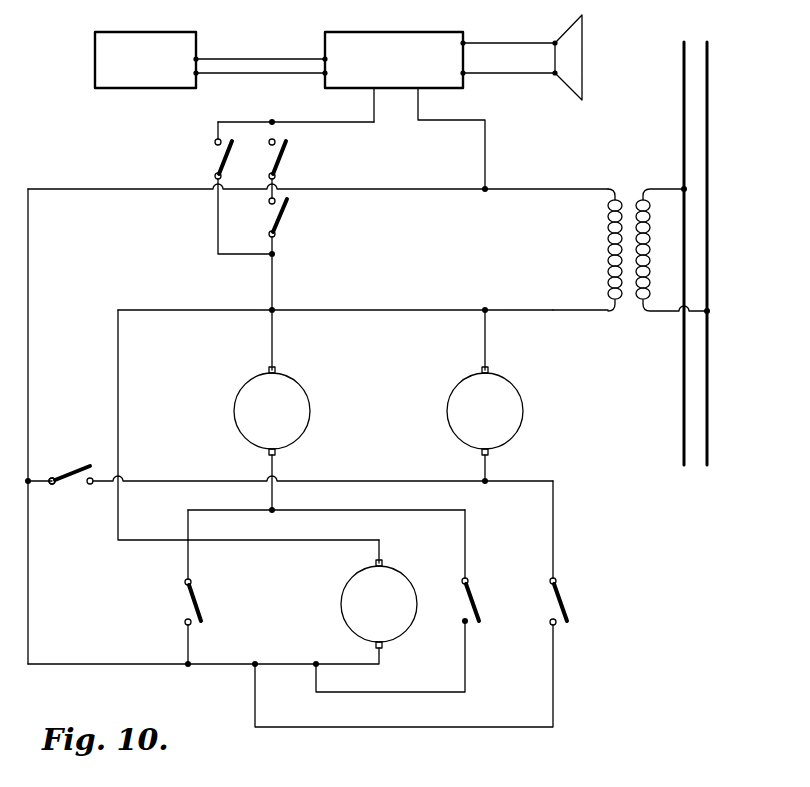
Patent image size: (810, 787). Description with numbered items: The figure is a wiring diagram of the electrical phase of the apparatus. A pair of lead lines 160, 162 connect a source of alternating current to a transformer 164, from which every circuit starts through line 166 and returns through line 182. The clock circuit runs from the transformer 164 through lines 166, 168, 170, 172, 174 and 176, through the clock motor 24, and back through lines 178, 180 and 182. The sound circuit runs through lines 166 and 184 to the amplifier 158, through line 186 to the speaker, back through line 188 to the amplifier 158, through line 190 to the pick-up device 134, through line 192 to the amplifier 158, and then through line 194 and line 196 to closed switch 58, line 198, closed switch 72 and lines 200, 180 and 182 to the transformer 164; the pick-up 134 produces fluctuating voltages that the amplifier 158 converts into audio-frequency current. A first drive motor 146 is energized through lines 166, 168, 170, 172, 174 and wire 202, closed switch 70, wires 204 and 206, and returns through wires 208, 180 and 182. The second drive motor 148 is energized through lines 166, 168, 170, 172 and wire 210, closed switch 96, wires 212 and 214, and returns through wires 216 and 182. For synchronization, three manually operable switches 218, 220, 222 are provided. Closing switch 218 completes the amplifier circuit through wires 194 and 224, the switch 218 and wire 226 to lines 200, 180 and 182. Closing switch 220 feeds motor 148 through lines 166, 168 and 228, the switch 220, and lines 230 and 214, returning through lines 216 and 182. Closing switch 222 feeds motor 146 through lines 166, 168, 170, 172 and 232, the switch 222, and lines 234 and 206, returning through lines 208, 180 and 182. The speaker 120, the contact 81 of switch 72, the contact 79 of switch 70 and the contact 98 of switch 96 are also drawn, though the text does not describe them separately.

The pick-up device 134 is at (143, 34).
The amplifier 158 is at (398, 33).
The line 190 is at (259, 58).
The line 192 is at (262, 74).
The line 188 is at (510, 44).
The line 186 is at (511, 75).
The loudspeaker 120 is at (575, 62).
The lead line 160 is at (683, 122).
The lead line 162 is at (709, 111).
The transformer 164 is at (657, 241).
The line 166 is at (540, 195).
The line 168 is at (403, 194).
The line 184 is at (487, 148).
The line 194 is at (368, 126).
The line 196 is at (273, 126).
The wire 224 is at (217, 121).
The manually operable switch 218 is at (215, 160).
The switch 58 is at (288, 159).
The line 198 is at (276, 198).
The switch contact 81 is at (270, 206).
The switch 72 is at (284, 220).
The wire 226 is at (217, 245).
The line 200 is at (274, 281).
The line 180 is at (377, 309).
The line 182 is at (558, 313).
The wire 208 is at (276, 342).
The wire 216 is at (488, 350).
The electric motor 146 is at (309, 398).
The electric motor 148 is at (519, 392).
The wire 206 is at (276, 470).
The wire 214 is at (488, 468).
The line 230 is at (356, 482).
The manually operable switch 220 is at (84, 468).
The line 228 is at (42, 483).
The line 234 is at (229, 512).
The line 178 is at (143, 542).
The wire 212 is at (556, 525).
The wire 204 is at (468, 545).
The motor 24 is at (338, 611).
The manually operable switch 222 is at (202, 616).
The line 232 is at (191, 650).
The switch 70 is at (475, 603).
The switch contact 79 is at (463, 622).
The switch 96 is at (566, 598).
The switch contact 98 is at (550, 622).
The line 170 is at (83, 666).
The line 172 is at (214, 672).
The line 174 is at (285, 668).
The line 176 is at (353, 667).
The wire 202 is at (468, 676).
The wire 210 is at (420, 728).